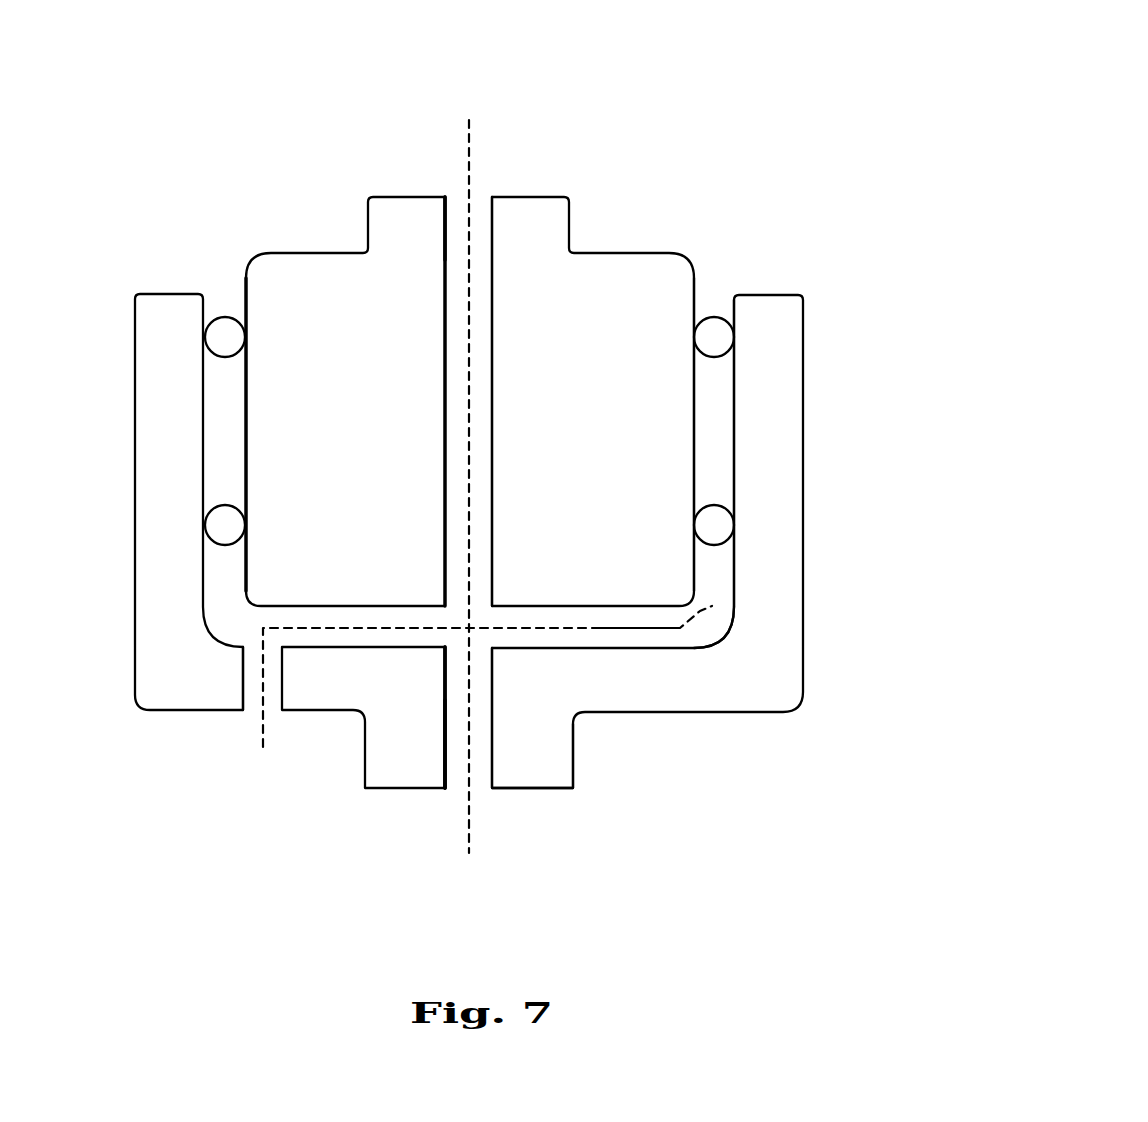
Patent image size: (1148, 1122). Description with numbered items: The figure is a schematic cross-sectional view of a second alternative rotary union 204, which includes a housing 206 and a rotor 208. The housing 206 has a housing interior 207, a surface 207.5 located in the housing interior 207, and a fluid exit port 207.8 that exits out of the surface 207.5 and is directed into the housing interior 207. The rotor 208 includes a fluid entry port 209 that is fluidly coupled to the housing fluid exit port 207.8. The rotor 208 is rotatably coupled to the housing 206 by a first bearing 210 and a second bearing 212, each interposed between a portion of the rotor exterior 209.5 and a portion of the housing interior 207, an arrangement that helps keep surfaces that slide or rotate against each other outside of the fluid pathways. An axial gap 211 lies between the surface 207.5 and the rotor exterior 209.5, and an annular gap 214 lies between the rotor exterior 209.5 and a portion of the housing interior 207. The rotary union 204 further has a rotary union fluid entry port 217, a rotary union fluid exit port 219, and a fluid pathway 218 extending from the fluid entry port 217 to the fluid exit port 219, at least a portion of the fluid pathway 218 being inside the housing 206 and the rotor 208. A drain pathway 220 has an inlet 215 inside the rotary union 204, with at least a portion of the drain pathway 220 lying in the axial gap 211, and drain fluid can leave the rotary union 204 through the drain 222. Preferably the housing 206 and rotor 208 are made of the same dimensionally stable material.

The rotary union 204 is at (724, 74).
The housing 206 is at (783, 408).
The housing interior 207 is at (718, 467).
The surface 207.5 is at (677, 647).
The fluid exit port 207.8 is at (457, 658).
The rotor 208 is at (630, 265).
The fluid entry port 209 is at (482, 590).
The rotor exterior 209.5 is at (695, 303).
The first bearing 210 is at (726, 338).
The axial gap 211 is at (647, 635).
The second bearing 212 is at (723, 528).
The annular gap 214 is at (218, 440).
The inlet 215 is at (440, 635).
The rotary union fluid entry port 217 is at (460, 783).
The fluid pathway 218 is at (469, 124).
The rotary union fluid exit port 219 is at (455, 208).
The drain pathway 220 is at (263, 747).
The drain 222 is at (253, 677).